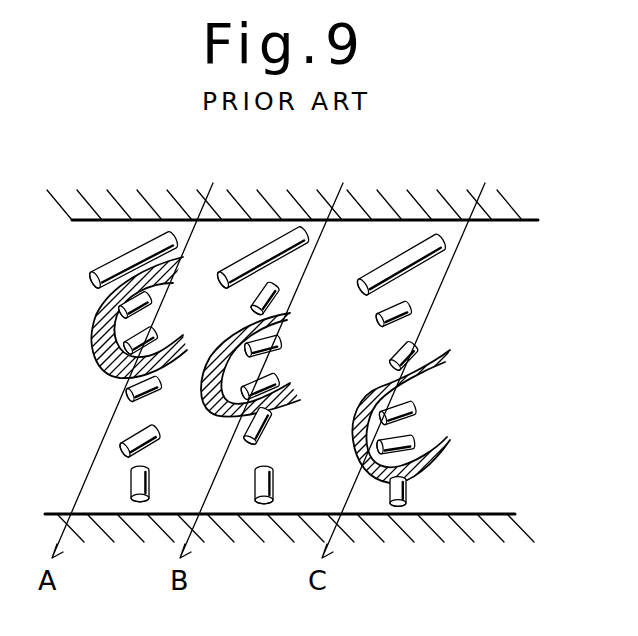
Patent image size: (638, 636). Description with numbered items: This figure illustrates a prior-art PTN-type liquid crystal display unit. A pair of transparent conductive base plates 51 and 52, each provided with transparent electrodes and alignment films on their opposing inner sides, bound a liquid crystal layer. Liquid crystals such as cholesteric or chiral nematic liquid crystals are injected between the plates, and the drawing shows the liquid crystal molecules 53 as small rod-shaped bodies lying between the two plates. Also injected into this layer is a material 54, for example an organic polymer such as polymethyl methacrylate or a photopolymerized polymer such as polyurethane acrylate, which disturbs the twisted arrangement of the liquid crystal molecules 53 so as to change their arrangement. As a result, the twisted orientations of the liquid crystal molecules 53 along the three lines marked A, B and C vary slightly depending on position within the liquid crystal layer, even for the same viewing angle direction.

The transparent conductive base plate 51 is at (479, 513).
The transparent conductive base plate 52 is at (99, 218).
The liquid crystal molecules 53 is at (100, 268).
The material which disturbs the twisted arrangement of the liquid crystal molecules 54 is at (95, 352).